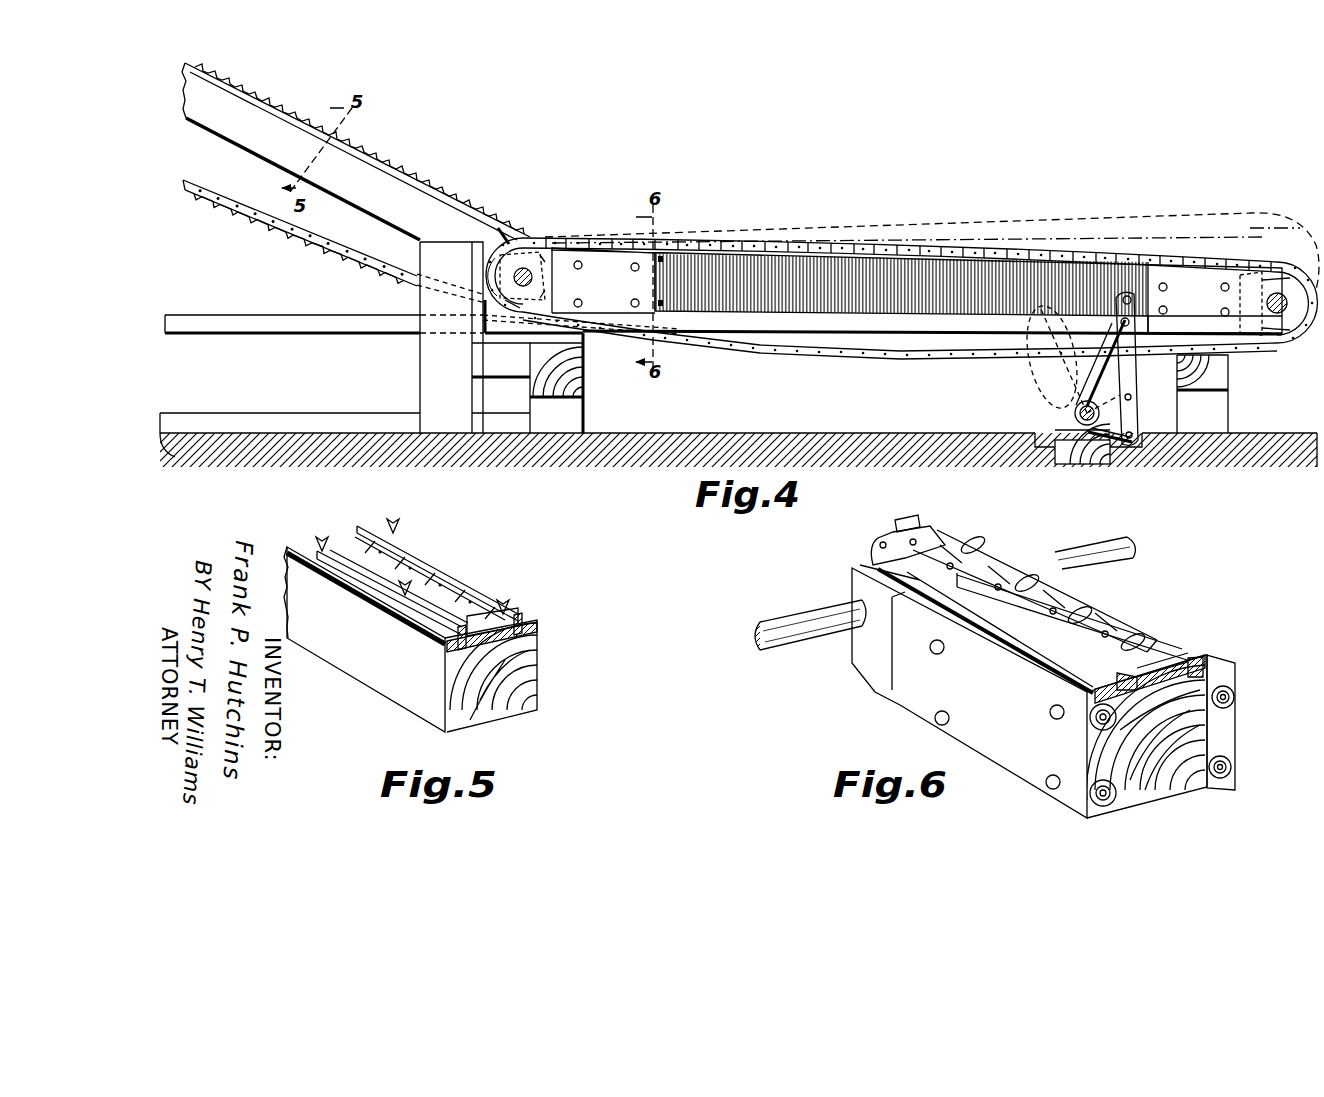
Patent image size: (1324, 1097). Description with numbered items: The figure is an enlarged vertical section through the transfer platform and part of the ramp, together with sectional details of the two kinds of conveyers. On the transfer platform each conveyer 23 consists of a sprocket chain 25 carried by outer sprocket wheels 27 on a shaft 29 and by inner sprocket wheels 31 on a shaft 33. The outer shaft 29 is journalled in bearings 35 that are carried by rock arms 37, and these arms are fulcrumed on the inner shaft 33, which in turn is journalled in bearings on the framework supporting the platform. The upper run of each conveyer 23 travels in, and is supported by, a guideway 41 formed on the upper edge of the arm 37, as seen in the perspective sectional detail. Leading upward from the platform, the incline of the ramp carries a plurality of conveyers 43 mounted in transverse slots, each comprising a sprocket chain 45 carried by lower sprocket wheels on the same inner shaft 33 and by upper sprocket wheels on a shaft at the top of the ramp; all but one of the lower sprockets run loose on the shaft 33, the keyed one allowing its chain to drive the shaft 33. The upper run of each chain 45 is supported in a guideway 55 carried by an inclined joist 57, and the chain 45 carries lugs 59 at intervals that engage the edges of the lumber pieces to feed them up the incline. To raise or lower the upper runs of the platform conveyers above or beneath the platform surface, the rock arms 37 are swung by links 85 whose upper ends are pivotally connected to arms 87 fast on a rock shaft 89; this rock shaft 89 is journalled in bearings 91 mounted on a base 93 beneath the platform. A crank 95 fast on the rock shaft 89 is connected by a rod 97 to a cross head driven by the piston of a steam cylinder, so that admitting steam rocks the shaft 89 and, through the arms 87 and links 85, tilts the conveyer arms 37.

In FIG. 4, the conveyer 23 is at (968, 247).
In FIG. 4, the sprocket chain 25 is at (862, 352).
In FIG. 6, the sprocket chain 25 is at (1115, 585).
In FIG. 4, the outer sprocket wheel 27 is at (1282, 272).
In FIG. 4, the shaft 29 is at (1290, 340).
In FIG. 4, the inner sprocket wheel 31 is at (483, 264).
In FIG. 6, the inner sprocket wheel 31 is at (895, 558).
In FIG. 4, the shaft 33 is at (478, 298).
In FIG. 6, the shaft 33 is at (790, 620).
In FIG. 4, the bearing 35 is at (1273, 340).
In FIG. 4, the rock arm 37 is at (882, 291).
In FIG. 6, the rock arm 37 is at (1155, 800).
In FIG. 6, the guideway 41 is at (1160, 665).
In FIG. 4, the conveyer 43 is at (268, 83).
In FIG. 4, the sprocket chain 45 is at (235, 208).
In FIG. 5, the sprocket chain 45 is at (447, 586).
In FIG. 5, the guideway 55 is at (525, 626).
In FIG. 4, the inclined joist 57 is at (233, 137).
In FIG. 5, the inclined joist 57 is at (540, 667).
In FIG. 5, the lug 59 is at (403, 548).
In FIG. 4, the link 85 is at (1134, 377).
In FIG. 4, the arm 87 is at (1134, 407).
In FIG. 4, the rock shaft 89 is at (1074, 413).
In FIG. 4, the bearing 91 is at (1055, 419).
In FIG. 4, the base 93 is at (1062, 465).
In FIG. 4, the crank 95 is at (1085, 388).
In FIG. 4, the rod 97 is at (289, 318).